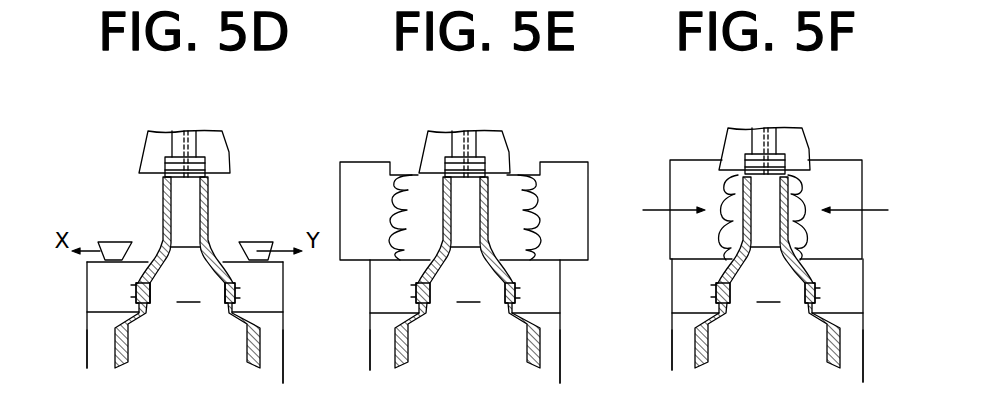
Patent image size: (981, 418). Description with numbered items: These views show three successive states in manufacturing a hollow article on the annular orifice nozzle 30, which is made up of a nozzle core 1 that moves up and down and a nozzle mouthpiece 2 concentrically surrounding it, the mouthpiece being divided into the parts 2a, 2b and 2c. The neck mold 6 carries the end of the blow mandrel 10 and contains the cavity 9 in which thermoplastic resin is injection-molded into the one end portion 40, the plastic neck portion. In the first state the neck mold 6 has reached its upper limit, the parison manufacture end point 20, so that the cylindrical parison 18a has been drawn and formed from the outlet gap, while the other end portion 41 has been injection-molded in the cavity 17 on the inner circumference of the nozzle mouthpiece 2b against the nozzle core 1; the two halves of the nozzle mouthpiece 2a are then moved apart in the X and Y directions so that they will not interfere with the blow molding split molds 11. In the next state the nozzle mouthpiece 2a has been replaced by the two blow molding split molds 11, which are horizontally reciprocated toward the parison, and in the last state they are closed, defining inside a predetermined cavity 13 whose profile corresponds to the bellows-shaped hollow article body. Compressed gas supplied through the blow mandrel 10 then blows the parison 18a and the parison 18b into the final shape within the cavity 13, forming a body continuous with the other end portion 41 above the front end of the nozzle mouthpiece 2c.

In FIG. 5D, the nozzle core 1 is at (185, 274).
In FIG. 5E, the nozzle core 1 is at (465, 274).
In FIG. 5F, the nozzle core 1 is at (737, 272).
In FIG. 5D, the nozzle mouthpiece 2 is at (93, 307).
In FIG. 5E, the nozzle mouthpiece 2 is at (387, 302).
In FIG. 5F, the nozzle mouthpiece 2 is at (683, 300).
In FIG. 5D, the nozzle mouthpiece 2a is at (106, 242).
In FIG. 5D, the nozzle mouthpiece 2b is at (100, 300).
In FIG. 5E, the nozzle mouthpiece 2b is at (393, 282).
In FIG. 5F, the nozzle mouthpiece 2b is at (692, 282).
In FIG. 5D, the nozzle mouthpiece 2c is at (95, 343).
In FIG. 5E, the nozzle mouthpiece 2c is at (388, 330).
In FIG. 5F, the nozzle mouthpiece 2c is at (683, 330).
In FIG. 5D, the neck mold 6 is at (146, 141).
In FIG. 5E, the neck mold 6 is at (442, 143).
In FIG. 5F, the neck mold 6 is at (738, 138).
In FIG. 5D, the cavity 9 is at (203, 160).
In FIG. 5E, the cavity 9 is at (483, 160).
In FIG. 5F, the cavity 9 is at (787, 160).
In FIG. 5E, the blow mandrel 10 is at (463, 130).
In FIG. 5F, the blow mandrel 10 is at (763, 128).
In FIG. 5E, the blow molding split mold 11 is at (373, 173).
In FIG. 5F, the blow molding split mold 11 is at (697, 170).
In FIG. 5E, the cavity 13 is at (527, 207).
In FIG. 5F, the cavity 13 is at (803, 203).
In FIG. 5D, the cavity 17 is at (238, 296).
In FIG. 5E, the cavity 17 is at (515, 292).
In FIG. 5F, the cavity 17 is at (817, 292).
In FIG. 5D, the parison 18a is at (208, 205).
In FIG. 5E, the parison 18a is at (487, 217).
In FIG. 5F, the parison 18a is at (800, 220).
In FIG. 5D, the parison 18b is at (218, 257).
In FIG. 5E, the parison 18b is at (493, 243).
In FIG. 5D, the parison manufacture end point 20 is at (136, 195).
In FIG. 5D, the annular orifice nozzle 30 is at (86, 272).
In FIG. 5D, the one end portion 40 is at (229, 159).
In FIG. 5E, the one end portion 40 is at (483, 170).
In FIG. 5F, the one end portion 40 is at (783, 170).
In FIG. 5D, the other end portion 41 is at (238, 284).
In FIG. 5E, the other end portion 41 is at (515, 280).
In FIG. 5F, the other end portion 41 is at (813, 280).